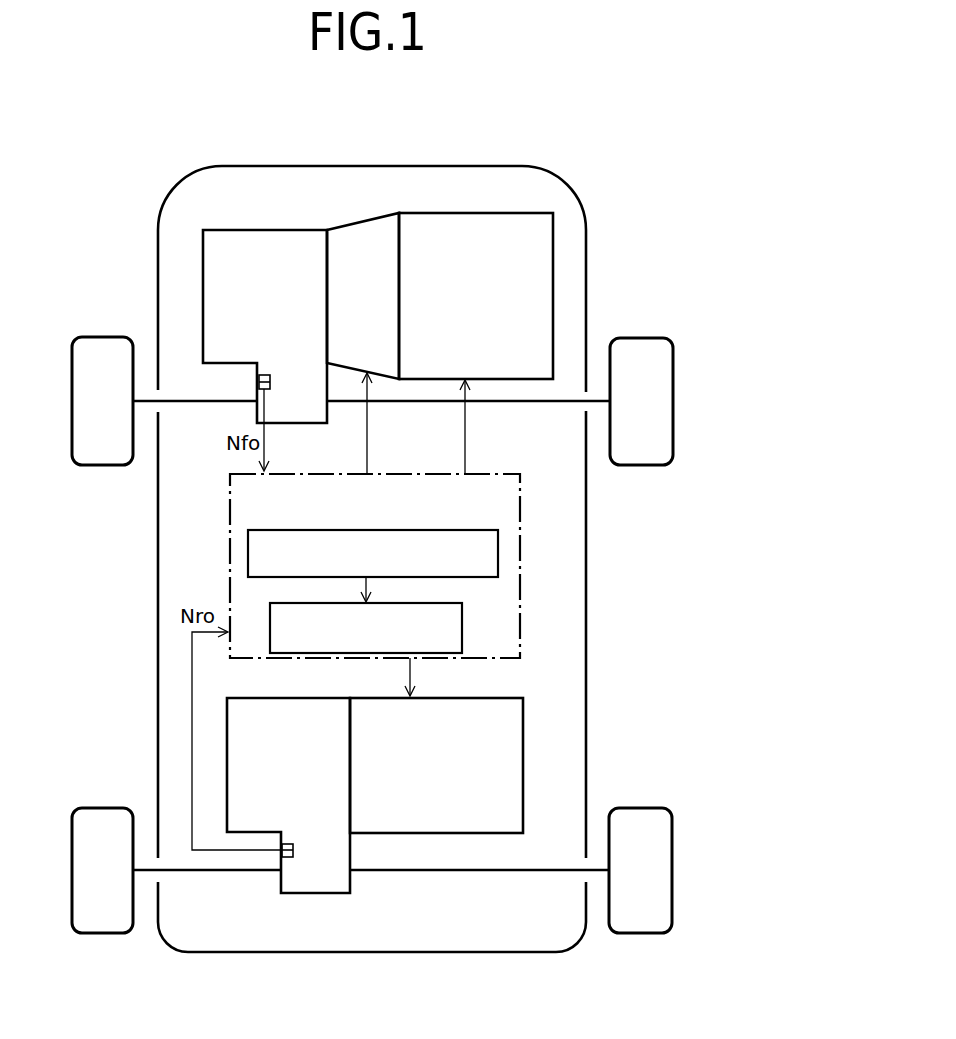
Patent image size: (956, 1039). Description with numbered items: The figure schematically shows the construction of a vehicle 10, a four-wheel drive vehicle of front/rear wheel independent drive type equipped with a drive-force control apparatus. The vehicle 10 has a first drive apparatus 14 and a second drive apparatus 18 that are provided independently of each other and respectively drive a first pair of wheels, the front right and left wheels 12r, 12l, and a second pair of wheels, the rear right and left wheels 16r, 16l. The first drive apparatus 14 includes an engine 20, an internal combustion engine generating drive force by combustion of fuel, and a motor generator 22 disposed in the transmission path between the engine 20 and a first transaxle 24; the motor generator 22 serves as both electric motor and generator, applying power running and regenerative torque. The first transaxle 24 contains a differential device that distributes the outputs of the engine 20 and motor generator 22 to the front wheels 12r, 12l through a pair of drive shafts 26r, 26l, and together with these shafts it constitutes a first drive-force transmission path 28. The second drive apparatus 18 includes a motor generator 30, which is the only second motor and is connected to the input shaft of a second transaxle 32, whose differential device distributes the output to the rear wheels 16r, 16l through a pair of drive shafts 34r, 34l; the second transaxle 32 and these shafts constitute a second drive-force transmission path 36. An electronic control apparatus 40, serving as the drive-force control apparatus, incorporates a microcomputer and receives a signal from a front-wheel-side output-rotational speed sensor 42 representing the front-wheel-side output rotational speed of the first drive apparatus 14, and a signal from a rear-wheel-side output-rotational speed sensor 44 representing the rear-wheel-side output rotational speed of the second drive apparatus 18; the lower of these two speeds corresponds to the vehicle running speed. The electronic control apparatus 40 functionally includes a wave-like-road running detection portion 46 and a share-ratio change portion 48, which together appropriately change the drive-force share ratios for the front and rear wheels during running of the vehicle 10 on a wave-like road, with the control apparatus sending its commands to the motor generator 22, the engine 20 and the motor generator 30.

The vehicle 10 is at (597, 161).
The front left wheel 12l is at (99, 350).
The front right wheel 12r is at (644, 350).
The first drive apparatus 14 is at (378, 279).
The rear left wheel 16l is at (99, 820).
The rear right wheel 16r is at (642, 820).
The second drive apparatus 18 is at (431, 756).
The engine 20 is at (461, 222).
The motor generator 22 is at (359, 245).
The first transaxle 24 is at (260, 240).
The drive shaft 26l is at (185, 398).
The drive shaft 26r is at (527, 405).
The first drive-force transmission path 28 is at (360, 427).
The motor generator 30 is at (455, 710).
The second transaxle 32 is at (283, 710).
The drive shaft 34l is at (202, 875).
The drive shaft 34r is at (476, 875).
The second drive-force transmission path 36 is at (371, 926).
The electronic control apparatus 40 is at (375, 553).
The front-wheel-side output-rotational speed sensor 42 is at (270, 381).
The rear-wheel-side output-rotational speed sensor 44 is at (293, 850).
The wave-like-road running detection portion 46 is at (430, 538).
The share-ratio change portion 48 is at (410, 612).